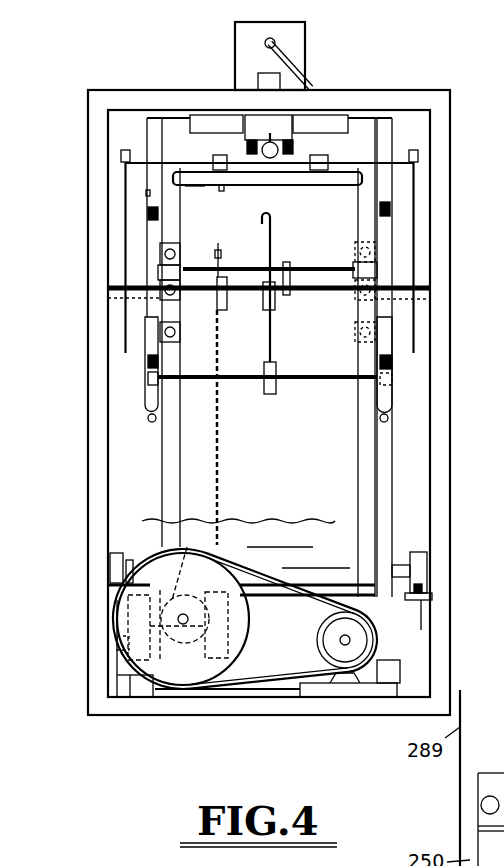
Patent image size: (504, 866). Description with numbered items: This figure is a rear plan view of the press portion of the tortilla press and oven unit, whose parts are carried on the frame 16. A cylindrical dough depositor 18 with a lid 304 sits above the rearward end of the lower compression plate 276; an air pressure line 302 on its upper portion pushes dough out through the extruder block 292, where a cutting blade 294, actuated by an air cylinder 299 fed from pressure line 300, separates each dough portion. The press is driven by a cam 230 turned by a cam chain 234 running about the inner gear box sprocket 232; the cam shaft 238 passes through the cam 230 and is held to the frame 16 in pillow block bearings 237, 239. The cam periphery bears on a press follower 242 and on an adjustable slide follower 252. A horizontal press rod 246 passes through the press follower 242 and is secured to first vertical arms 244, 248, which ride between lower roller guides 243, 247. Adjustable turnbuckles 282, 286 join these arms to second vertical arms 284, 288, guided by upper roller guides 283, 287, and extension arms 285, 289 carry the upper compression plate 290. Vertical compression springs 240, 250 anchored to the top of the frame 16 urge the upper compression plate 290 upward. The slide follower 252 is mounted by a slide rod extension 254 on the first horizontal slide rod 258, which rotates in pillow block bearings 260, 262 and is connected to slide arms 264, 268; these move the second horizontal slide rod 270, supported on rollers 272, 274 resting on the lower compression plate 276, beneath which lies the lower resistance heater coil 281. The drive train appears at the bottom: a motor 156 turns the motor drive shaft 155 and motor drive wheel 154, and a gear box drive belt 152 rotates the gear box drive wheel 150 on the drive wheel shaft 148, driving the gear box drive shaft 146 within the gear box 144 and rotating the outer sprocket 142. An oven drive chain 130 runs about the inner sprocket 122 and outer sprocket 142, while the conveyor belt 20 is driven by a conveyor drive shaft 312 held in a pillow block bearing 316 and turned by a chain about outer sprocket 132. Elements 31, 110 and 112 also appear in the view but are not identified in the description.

The frame 16 is at (452, 415).
The dough depositor 18 is at (306, 52).
The conveyor belt 20 is at (394, 522).
The bracket 31 is at (418, 571).
The base support 110 is at (117, 618).
The base plate 112 is at (117, 671).
The inner sprocket 122 is at (187, 547).
The oven drive chain 130 is at (124, 690).
The outer sprocket 132 is at (117, 643).
The outer gear box sprocket 142 is at (130, 698).
The gear box 144 is at (181, 598).
The gear box drive shaft 146 is at (165, 698).
The drive wheel shaft 148 is at (189, 620).
The gear box drive wheel 150 is at (248, 621).
The gear box drive belt 152 is at (256, 672).
The motor drive wheel 154 is at (378, 612).
The motor drive shaft 155 is at (340, 628).
The motor 156 is at (395, 662).
The cam 230 is at (269, 287).
The inner gear box sprocket 232 is at (238, 690).
The cam chain 234 is at (222, 445).
The pillow block bearing 237 is at (181, 331).
The cam shaft 238 is at (247, 290).
The pillow block bearing 239 is at (356, 338).
The first vertical compression spring 240 is at (151, 424).
The press follower 242 is at (278, 372).
The lower roller guides 243 is at (145, 362).
The first vertical arm 244 is at (140, 378).
The horizontal press rod 246 is at (304, 383).
The lower roller guides 247 is at (392, 361).
The first vertical arm 248 is at (392, 380).
The second vertical compression spring 250 is at (360, 432).
The adjustable slide follower 252 is at (254, 313).
The slide rod extension 254 is at (280, 300).
The first horizontal slide rod 258 is at (307, 258).
The pillow block bearing 260 is at (180, 247).
The pillow block bearing 262 is at (353, 256).
The slide arm 264 is at (146, 215).
The slide arm 268 is at (414, 233).
The second horizontal slide rod 270 is at (140, 158).
The roller 272 is at (215, 157).
The roller 274 is at (325, 157).
The lower horizontal compression plate 276 is at (360, 184).
The lower resistance heater coil 281 is at (270, 190).
The adjustable turnbuckle 282 is at (125, 288).
The upper roller guides 283 is at (148, 220).
The second vertical arm 284 is at (147, 193).
The extension arm 285 is at (178, 117).
The adjustable turnbuckle 286 is at (385, 288).
The upper roller guides 287 is at (392, 209).
The second vertical arm 288 is at (390, 179).
The extension arm 289 is at (367, 115).
The upper compression plate 290 is at (233, 114).
The extruder block 292 is at (320, 124).
The cutting blade 294 is at (216, 124).
The air cylinder 299 is at (266, 142).
The pressure line 300 is at (277, 139).
The air pressure line 302 is at (310, 72).
The lid 304 is at (305, 26).
The conveyor drive shaft 312 is at (405, 560).
The pillow block bearing 316 is at (118, 553).